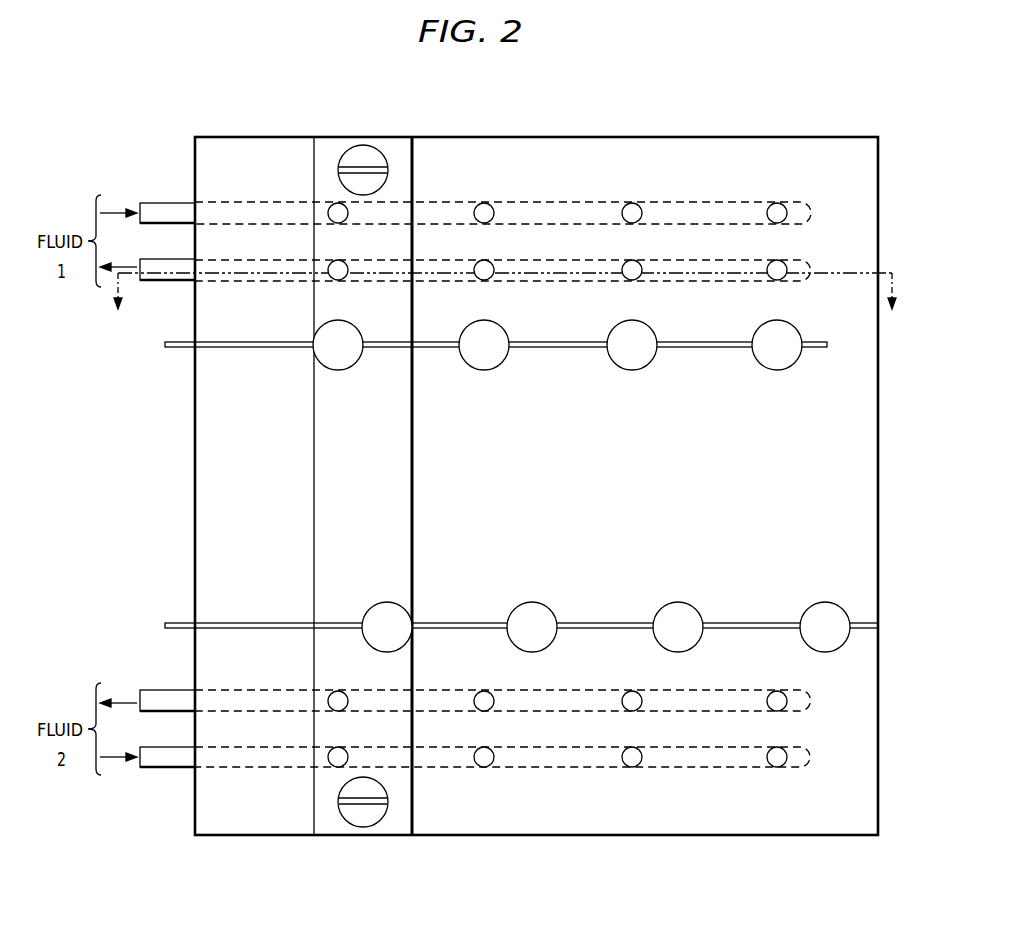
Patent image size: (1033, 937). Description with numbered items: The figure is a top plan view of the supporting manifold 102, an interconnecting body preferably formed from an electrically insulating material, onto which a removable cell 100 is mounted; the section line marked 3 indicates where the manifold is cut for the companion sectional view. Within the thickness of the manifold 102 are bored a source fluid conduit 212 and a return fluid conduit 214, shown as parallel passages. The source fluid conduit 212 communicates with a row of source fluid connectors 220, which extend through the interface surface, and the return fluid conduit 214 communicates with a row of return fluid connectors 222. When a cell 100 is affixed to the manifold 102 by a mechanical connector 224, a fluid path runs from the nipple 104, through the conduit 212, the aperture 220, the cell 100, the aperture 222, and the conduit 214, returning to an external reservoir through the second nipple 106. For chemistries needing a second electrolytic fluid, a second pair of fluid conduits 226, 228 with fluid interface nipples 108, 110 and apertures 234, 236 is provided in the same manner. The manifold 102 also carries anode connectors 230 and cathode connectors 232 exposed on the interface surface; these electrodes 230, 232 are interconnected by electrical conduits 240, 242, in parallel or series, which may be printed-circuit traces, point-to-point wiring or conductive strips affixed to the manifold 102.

The removable cell 100 is at (333, 147).
The supporting manifold 102 is at (735, 98).
The nipple 104 is at (187, 201).
The second nipple 106 is at (158, 283).
The fluid interface nipple 108 is at (170, 690).
The fluid interface nipple 110 is at (170, 769).
The source fluid conduit 212 is at (235, 198).
The return fluid conduit 214 is at (233, 285).
The source fluid connector 220 is at (346, 220).
The return fluid connector 222 is at (346, 280).
The mechanical connector 224 is at (361, 152).
The fluid conduit 226 is at (232, 689).
The fluid conduit 228 is at (234, 770).
The anode connector 230 is at (338, 371).
The cathode connector 232 is at (379, 605).
The aperture 234 is at (336, 690).
The aperture 236 is at (347, 752).
The electrical conduit 240 is at (186, 346).
The electrical conduit 242 is at (180, 623).
The section line for FIG. 3 is at (504, 305).